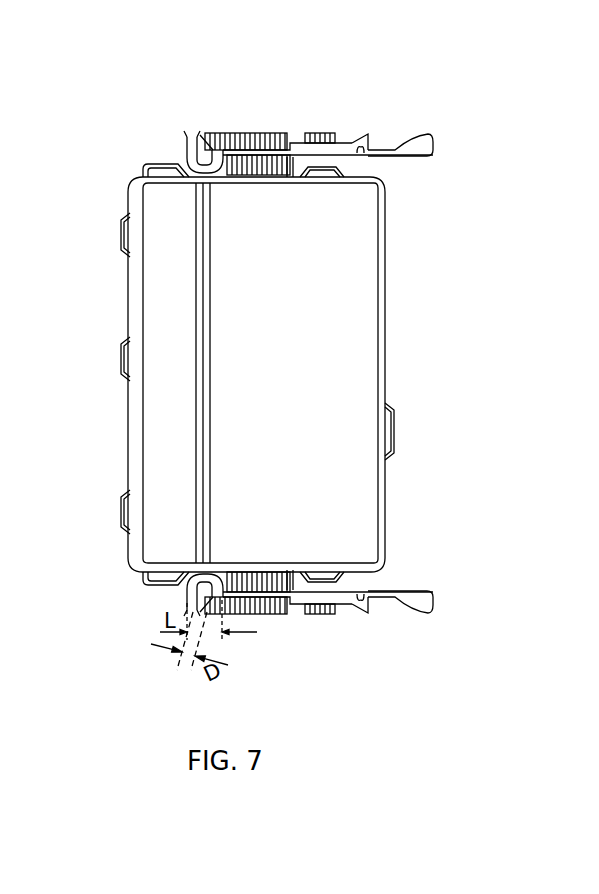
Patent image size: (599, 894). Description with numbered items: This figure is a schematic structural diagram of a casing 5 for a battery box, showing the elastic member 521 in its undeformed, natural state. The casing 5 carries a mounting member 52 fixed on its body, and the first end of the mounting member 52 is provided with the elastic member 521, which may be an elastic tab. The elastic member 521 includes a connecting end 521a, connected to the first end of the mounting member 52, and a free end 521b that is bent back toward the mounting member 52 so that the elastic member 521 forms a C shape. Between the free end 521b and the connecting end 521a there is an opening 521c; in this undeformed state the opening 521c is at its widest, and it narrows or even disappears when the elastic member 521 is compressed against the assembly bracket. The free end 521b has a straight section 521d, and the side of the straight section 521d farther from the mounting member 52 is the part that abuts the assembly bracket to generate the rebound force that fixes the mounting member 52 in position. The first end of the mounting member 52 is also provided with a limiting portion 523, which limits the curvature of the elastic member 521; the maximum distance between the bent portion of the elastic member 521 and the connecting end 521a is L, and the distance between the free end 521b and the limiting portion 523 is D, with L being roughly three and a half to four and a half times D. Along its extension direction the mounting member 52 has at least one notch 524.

The casing 5 is at (78, 321).
The mounting member 52 is at (334, 126).
The elastic member 521 is at (164, 93).
The connecting end 521a is at (220, 144).
The free end 521b is at (189, 124).
The opening 521c is at (185, 599).
The straight section 521d is at (178, 140).
The limiting portion 523 is at (230, 612).
The notch 524 is at (300, 128).